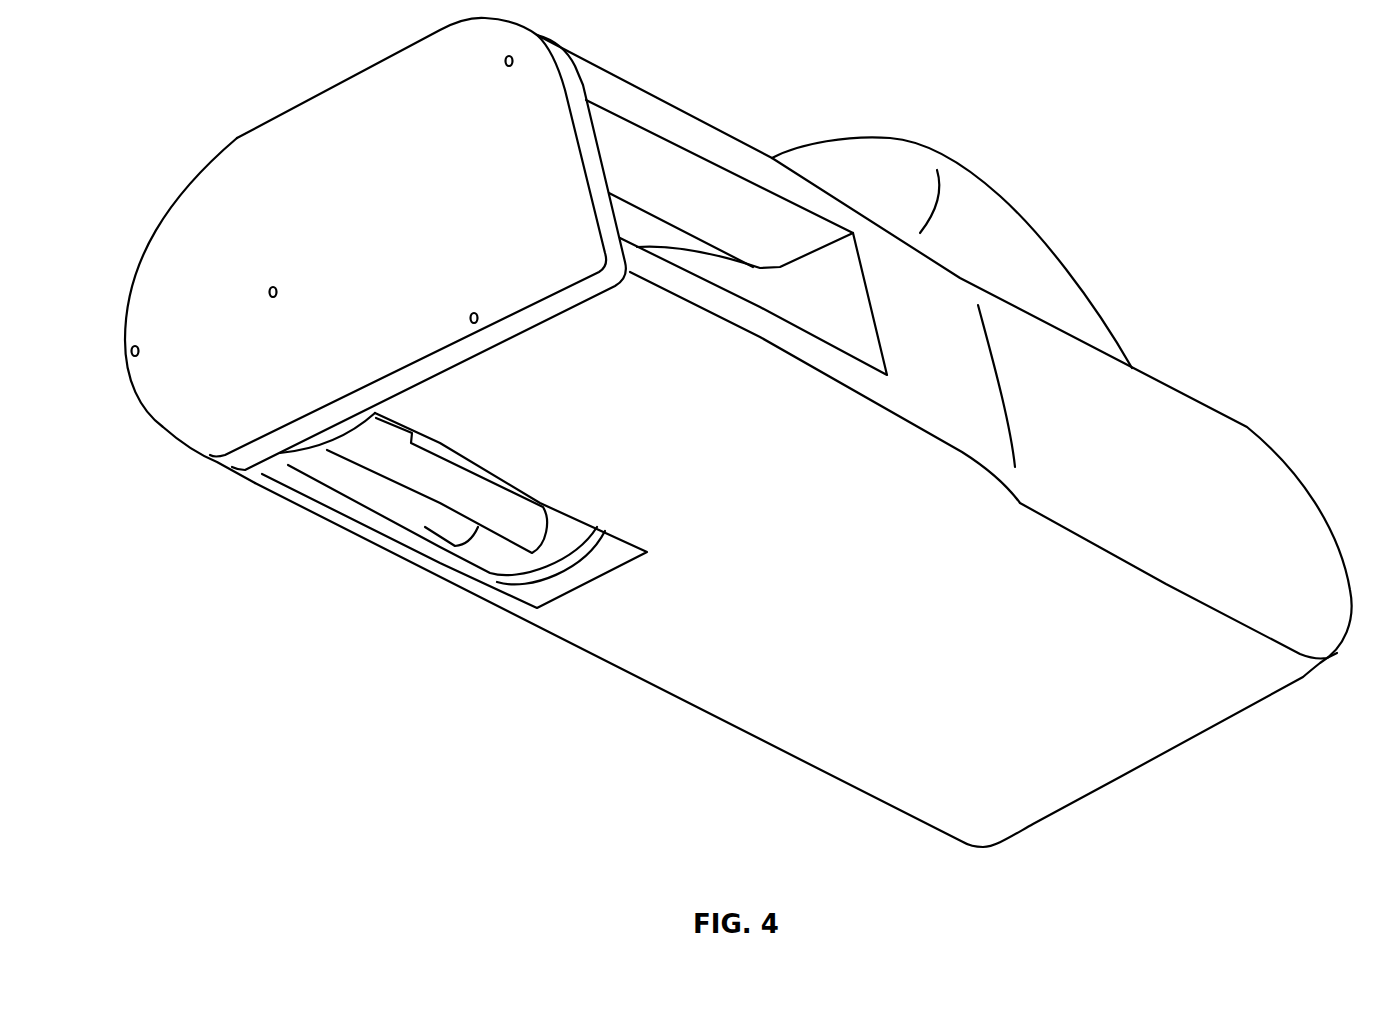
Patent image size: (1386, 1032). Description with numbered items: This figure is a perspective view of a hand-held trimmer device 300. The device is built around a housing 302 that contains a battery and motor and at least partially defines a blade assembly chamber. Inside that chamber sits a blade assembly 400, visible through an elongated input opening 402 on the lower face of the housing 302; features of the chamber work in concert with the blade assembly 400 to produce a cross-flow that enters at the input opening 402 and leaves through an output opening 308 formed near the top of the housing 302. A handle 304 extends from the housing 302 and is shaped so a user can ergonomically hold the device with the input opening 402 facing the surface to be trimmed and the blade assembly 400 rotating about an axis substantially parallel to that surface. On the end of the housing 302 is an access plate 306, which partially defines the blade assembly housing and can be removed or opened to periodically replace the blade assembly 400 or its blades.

The hand-held trimmer device 300 is at (188, 638).
The housing 302 is at (1295, 490).
The handle 304 is at (1030, 227).
The access plate 306 is at (173, 233).
The output opening 308 is at (686, 176).
The blade assembly 400 is at (431, 501).
The input opening 402 is at (533, 602).